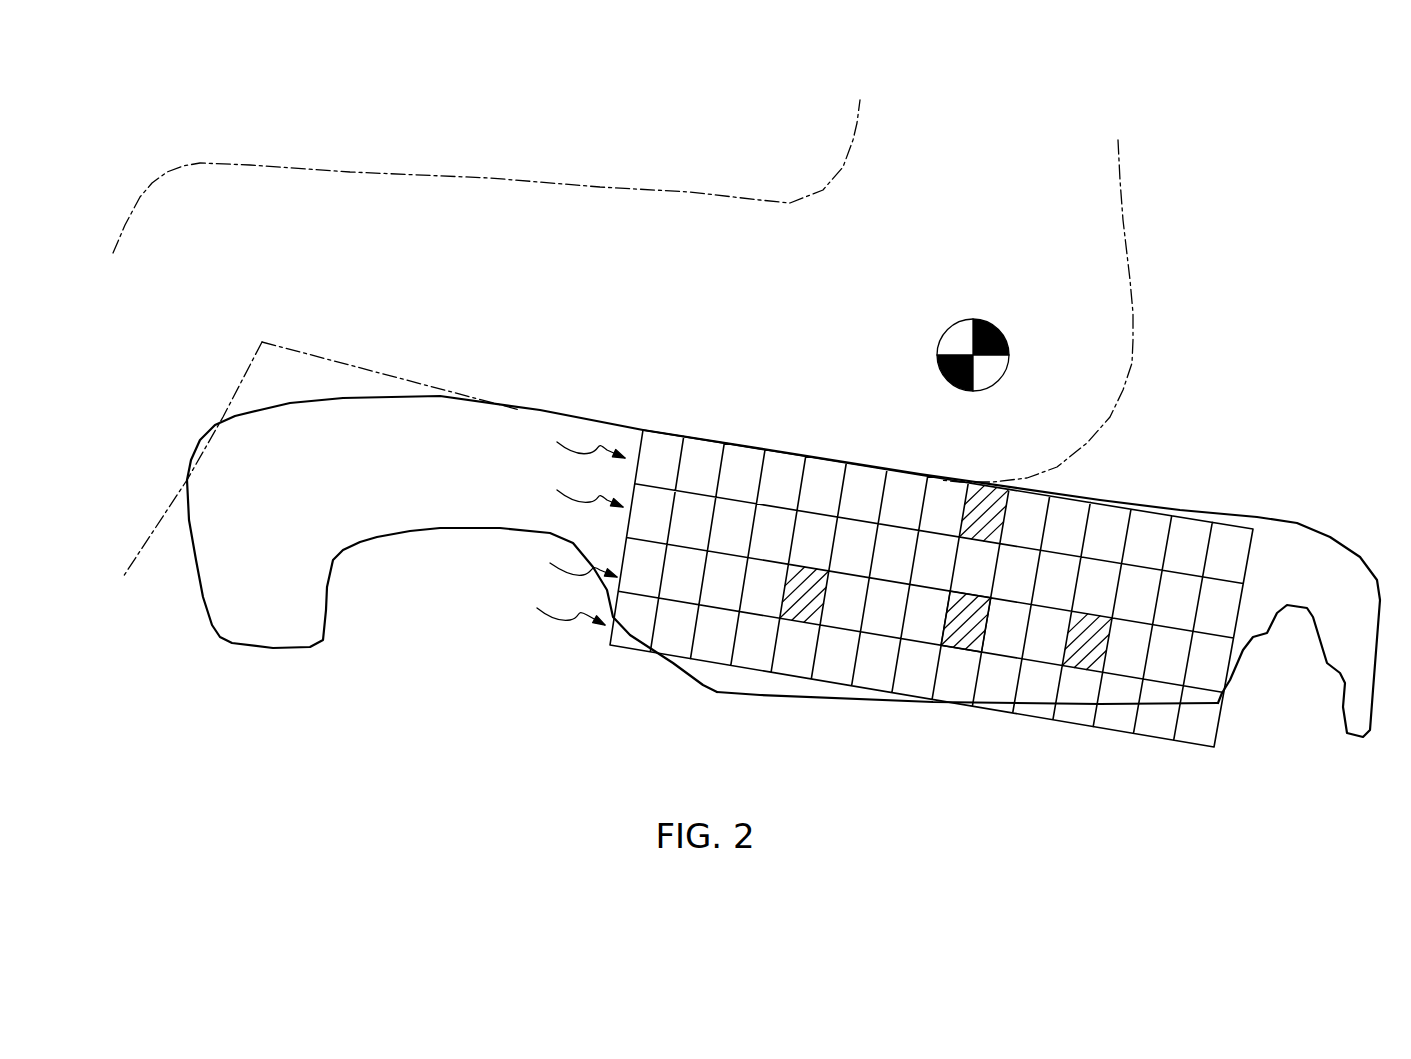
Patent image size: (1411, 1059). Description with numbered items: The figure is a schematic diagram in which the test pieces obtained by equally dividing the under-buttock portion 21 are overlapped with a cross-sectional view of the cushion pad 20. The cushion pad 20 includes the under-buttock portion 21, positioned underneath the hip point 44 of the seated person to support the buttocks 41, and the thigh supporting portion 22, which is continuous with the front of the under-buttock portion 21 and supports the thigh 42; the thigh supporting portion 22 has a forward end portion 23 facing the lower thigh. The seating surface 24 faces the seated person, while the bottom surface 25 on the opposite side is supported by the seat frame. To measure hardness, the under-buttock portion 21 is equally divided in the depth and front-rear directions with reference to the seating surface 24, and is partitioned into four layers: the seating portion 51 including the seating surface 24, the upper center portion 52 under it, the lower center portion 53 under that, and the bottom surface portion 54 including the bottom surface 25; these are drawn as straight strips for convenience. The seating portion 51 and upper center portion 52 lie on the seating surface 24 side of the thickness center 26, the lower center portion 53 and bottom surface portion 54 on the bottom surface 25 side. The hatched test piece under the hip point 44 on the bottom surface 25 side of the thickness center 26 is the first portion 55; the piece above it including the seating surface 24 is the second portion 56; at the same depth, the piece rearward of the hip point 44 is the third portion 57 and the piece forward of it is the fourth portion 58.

The cushion pad 20 is at (765, 402).
The under-buttock portion 21 is at (905, 483).
The thigh supporting portion 22 is at (377, 412).
The forward end portion 23 is at (283, 636).
The seating surface 24 is at (527, 403).
The bottom surface 25 is at (760, 693).
The thickness center 26 is at (968, 594).
The buttocks 41 is at (1093, 307).
The thigh 42 is at (500, 178).
The hip point 44 is at (957, 337).
The seating portion 51 is at (576, 439).
The upper center portion 52 is at (575, 489).
The lower center portion 53 is at (569, 559).
The bottom surface portion 54 is at (555, 606).
The first portion 55 is at (947, 628).
The second portion 56 is at (970, 510).
The third portion 57 is at (1100, 624).
The fourth portion 58 is at (800, 582).